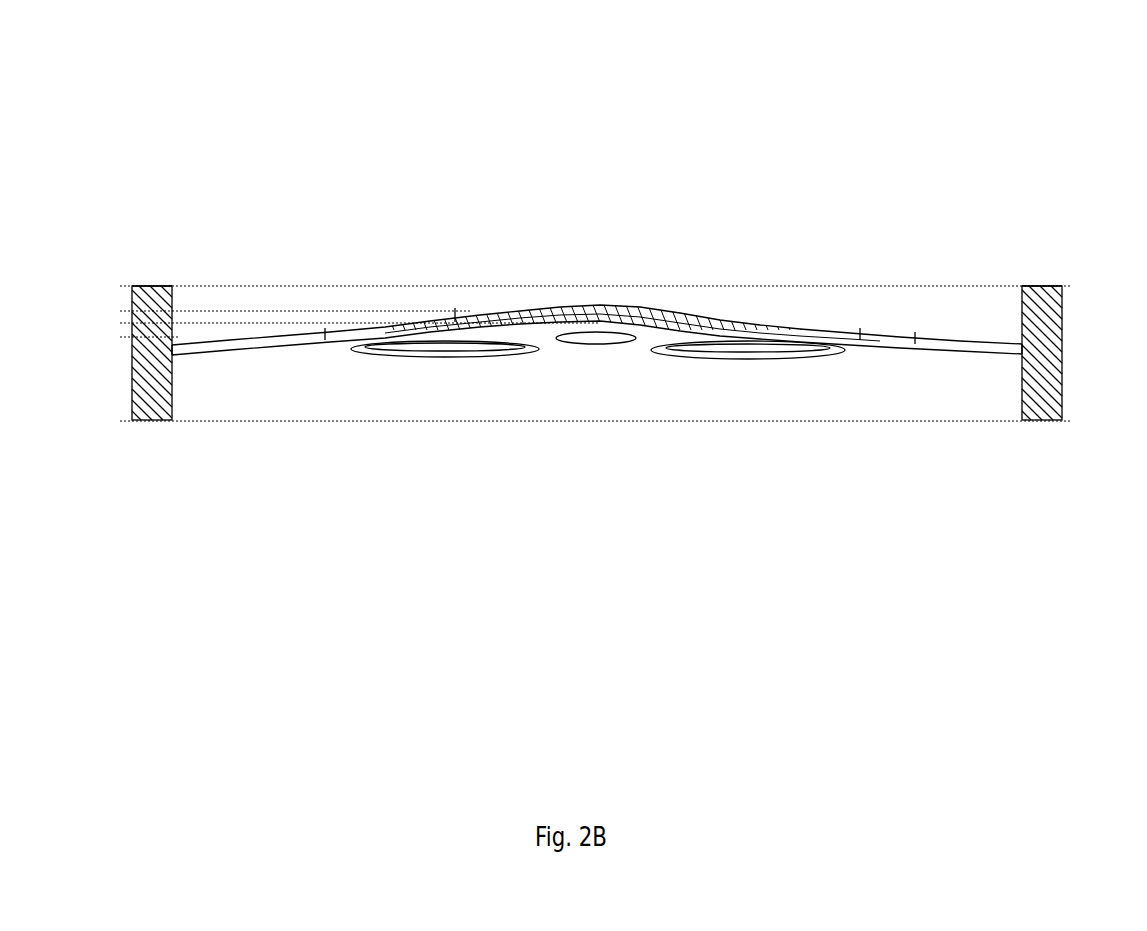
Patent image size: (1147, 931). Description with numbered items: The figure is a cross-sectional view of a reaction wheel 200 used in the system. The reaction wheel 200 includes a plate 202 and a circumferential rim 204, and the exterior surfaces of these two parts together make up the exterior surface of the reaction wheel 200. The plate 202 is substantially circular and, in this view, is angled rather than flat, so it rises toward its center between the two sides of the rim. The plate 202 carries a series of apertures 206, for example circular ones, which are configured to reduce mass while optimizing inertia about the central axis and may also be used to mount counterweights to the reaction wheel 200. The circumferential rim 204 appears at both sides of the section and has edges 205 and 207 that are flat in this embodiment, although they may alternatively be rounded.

The reaction wheel 200 is at (520, 165).
The plate 202 is at (275, 348).
The circumferential rim 204 is at (1048, 325).
The edge 205 is at (152, 286).
The apertures 206 is at (595, 341).
The edge 207 is at (152, 422).